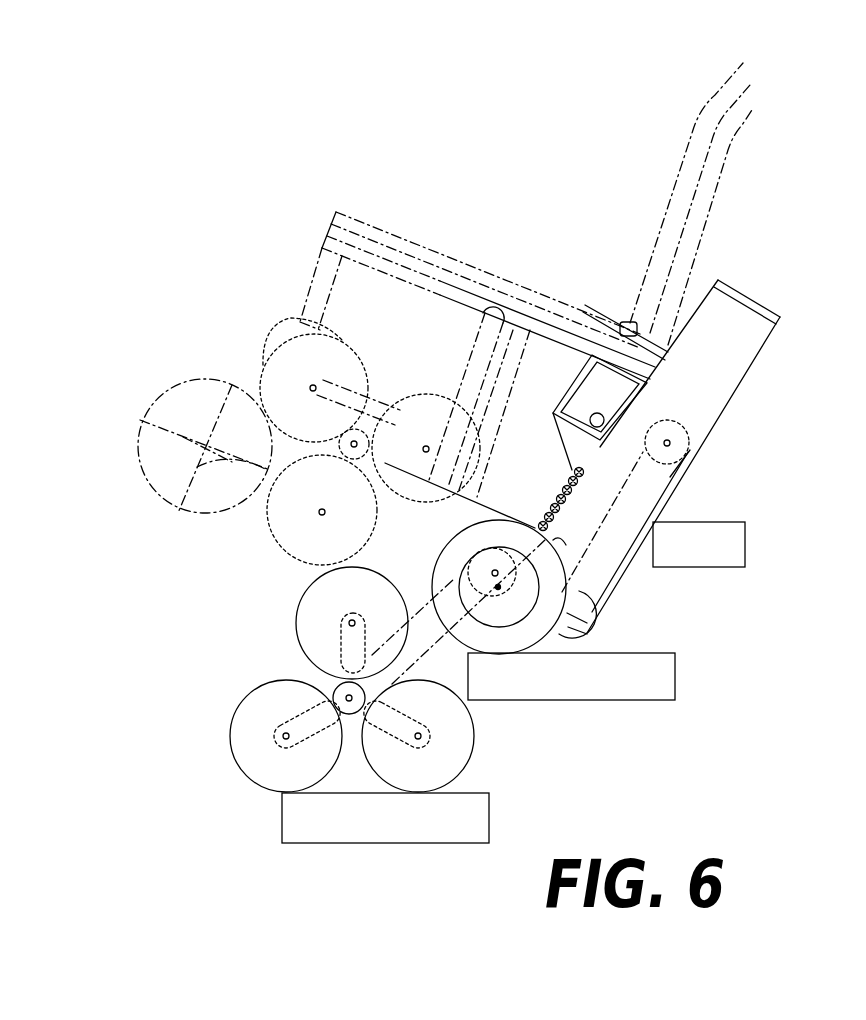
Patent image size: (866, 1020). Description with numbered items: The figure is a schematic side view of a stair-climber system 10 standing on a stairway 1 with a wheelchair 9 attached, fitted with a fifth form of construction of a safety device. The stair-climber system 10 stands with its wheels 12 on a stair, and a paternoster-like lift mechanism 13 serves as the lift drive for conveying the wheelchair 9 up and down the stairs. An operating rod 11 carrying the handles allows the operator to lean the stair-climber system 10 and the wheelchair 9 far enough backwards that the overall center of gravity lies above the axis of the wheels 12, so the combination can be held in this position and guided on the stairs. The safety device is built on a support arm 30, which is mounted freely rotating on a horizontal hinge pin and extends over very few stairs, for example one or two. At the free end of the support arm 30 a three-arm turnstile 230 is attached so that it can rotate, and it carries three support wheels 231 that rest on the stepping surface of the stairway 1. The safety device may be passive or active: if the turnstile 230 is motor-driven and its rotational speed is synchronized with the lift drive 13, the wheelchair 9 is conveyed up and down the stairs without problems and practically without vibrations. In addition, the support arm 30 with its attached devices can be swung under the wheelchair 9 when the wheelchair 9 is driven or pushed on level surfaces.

The stairway 1 is at (452, 820).
The wheelchair 9 is at (470, 270).
The stair-climber system 10 is at (713, 350).
The operating rod 11 is at (683, 204).
The wheels 12 is at (553, 627).
The lift mechanism 13 is at (695, 494).
The support arm 30 is at (428, 640).
The three-arm turnstile 230 is at (482, 575).
The support wheels 231 is at (318, 624).